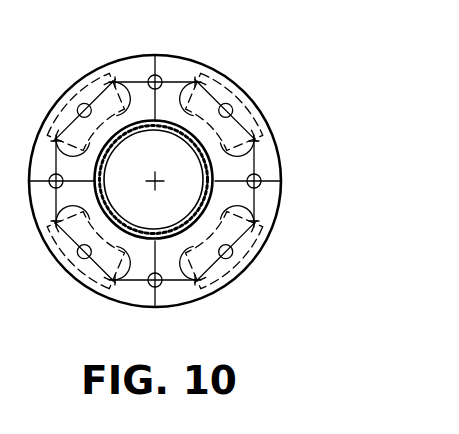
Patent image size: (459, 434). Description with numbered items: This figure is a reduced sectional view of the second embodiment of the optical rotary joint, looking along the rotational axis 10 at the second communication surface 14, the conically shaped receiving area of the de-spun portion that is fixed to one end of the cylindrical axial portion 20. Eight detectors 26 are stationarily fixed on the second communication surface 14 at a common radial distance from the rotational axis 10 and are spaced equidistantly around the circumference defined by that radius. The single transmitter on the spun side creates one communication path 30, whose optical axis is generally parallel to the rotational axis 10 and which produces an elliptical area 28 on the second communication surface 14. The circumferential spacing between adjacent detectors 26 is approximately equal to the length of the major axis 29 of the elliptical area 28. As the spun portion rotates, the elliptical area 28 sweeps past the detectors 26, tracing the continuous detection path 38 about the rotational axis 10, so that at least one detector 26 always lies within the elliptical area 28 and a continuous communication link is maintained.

The rotational axis 10 is at (157, 180).
The second communication surface 14 is at (44, 228).
The axial portion 20 is at (120, 120).
The detector 26 is at (153, 57).
The elliptical area 28 is at (243, 268).
The major axis 29 is at (156, 74).
The communication path 30 is at (267, 173).
The detection path 38 is at (265, 193).